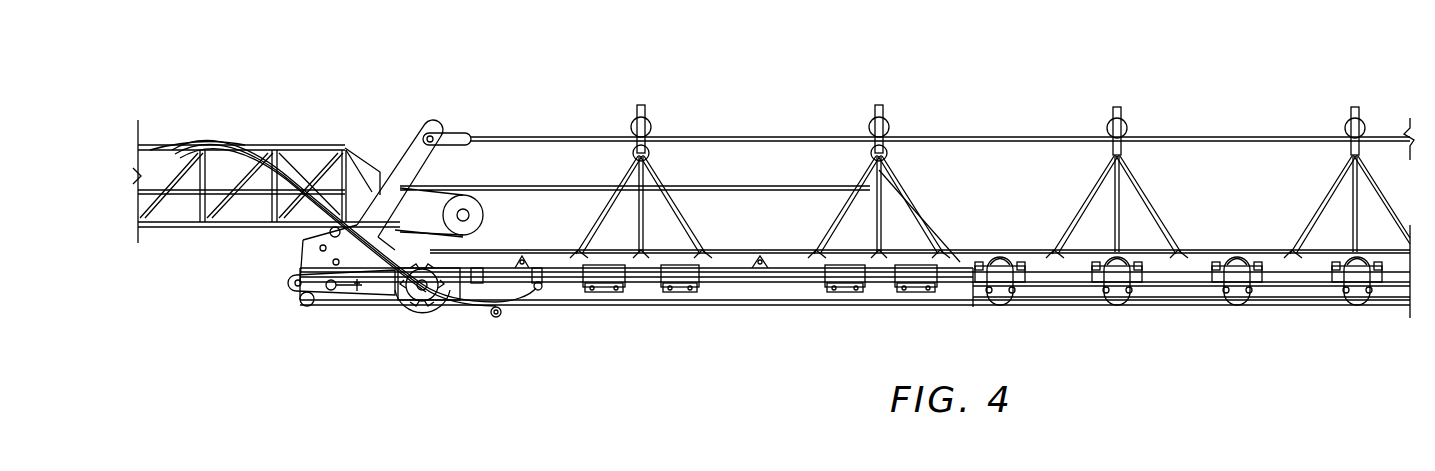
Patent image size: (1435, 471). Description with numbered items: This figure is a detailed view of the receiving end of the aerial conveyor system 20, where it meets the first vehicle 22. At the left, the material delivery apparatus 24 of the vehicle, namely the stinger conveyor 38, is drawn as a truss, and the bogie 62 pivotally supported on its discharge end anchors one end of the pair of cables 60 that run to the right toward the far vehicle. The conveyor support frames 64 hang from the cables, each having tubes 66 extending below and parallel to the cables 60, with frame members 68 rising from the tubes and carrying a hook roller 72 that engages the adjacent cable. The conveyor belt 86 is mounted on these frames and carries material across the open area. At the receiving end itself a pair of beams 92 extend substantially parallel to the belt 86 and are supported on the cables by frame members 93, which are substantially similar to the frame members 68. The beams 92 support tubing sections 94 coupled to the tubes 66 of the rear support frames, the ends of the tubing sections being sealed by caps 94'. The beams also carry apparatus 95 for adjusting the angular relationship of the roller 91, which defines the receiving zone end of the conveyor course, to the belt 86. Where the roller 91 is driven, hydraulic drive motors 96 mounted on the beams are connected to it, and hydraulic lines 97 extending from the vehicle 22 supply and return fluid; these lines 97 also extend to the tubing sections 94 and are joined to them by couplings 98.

The aerial conveyor system 20 is at (436, 106).
The first vehicle 22 is at (177, 140).
The material delivery apparatus 24 is at (198, 232).
The stinger conveyor 38 is at (192, 190).
The cables 60 is at (701, 135).
The bogie 62 is at (408, 150).
The conveyor support frames 64 is at (1215, 166).
The tubes 66 is at (1298, 280).
The frame members 68 is at (1095, 184).
The hook roller 72 is at (1106, 122).
The conveyor belt 86 is at (1040, 302).
The roller 91 is at (416, 307).
The beams 92 is at (781, 297).
The frame members 93 is at (616, 175).
The tubing sections 94 is at (636, 303).
The caps 94' is at (503, 244).
The apparatus for adjusting 95 is at (343, 296).
The hydraulic drive motors 96 is at (422, 292).
The lines 97 is at (302, 168).
The couplings 98 is at (538, 294).